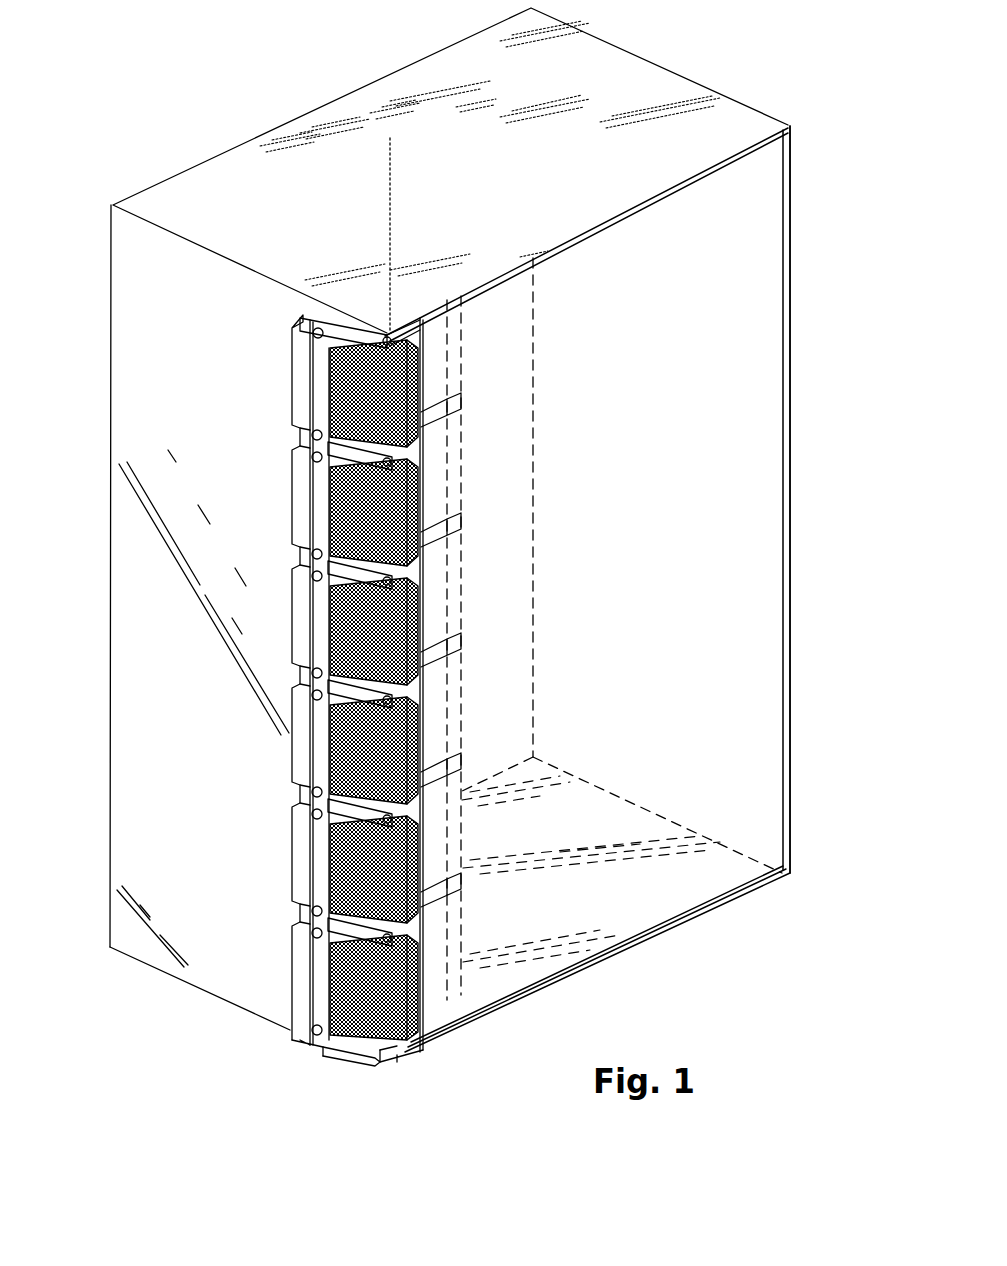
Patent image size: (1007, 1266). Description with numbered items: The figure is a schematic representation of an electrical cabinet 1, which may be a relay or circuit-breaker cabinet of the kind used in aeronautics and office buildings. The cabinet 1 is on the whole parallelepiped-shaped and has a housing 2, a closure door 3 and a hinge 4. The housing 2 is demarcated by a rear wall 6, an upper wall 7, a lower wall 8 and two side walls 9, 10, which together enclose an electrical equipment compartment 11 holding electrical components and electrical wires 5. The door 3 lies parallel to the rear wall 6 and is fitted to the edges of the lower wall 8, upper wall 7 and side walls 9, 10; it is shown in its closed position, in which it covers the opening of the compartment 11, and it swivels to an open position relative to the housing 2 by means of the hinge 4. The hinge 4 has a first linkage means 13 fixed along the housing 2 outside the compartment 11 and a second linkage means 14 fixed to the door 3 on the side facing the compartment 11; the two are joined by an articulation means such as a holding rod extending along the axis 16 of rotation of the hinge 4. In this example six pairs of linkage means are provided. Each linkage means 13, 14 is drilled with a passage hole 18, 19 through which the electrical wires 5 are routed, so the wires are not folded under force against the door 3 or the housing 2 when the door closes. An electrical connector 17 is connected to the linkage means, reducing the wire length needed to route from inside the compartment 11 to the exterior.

The electrical cabinet 1 is at (63, 485).
The housing 2 is at (187, 207).
The closure door 3 is at (628, 913).
The hinge 4 is at (355, 1058).
The electrical wires 5 is at (350, 346).
The rear wall 6 is at (111, 312).
The upper wall 7 is at (360, 107).
The lower wall 8 is at (628, 875).
The side wall 9 is at (158, 655).
The side wall 10 is at (737, 488).
The electrical equipment compartment 11 is at (733, 346).
The first linkage means 13 is at (332, 312).
The second linkage means 14 is at (420, 316).
The axis of rotation 16 is at (392, 152).
The electrical connector 17 is at (300, 402).
The passage hole 18 is at (333, 1050).
The passage hole 19 is at (398, 1058).